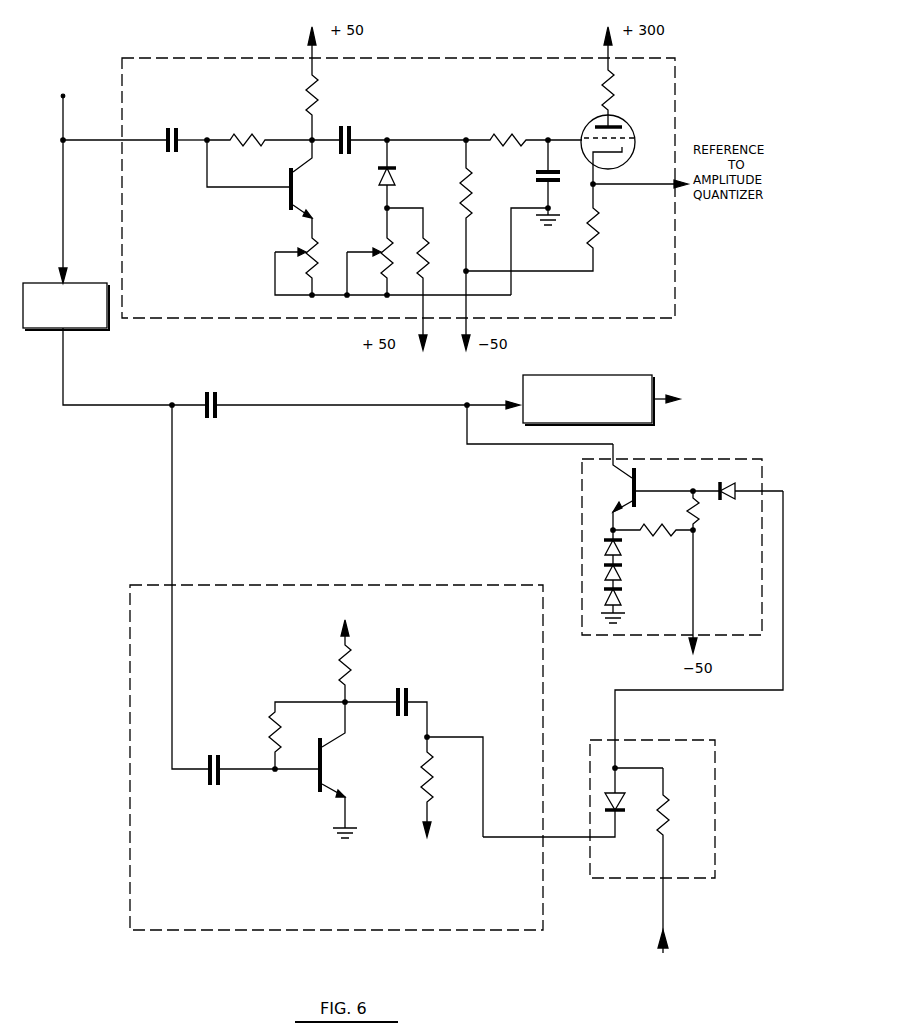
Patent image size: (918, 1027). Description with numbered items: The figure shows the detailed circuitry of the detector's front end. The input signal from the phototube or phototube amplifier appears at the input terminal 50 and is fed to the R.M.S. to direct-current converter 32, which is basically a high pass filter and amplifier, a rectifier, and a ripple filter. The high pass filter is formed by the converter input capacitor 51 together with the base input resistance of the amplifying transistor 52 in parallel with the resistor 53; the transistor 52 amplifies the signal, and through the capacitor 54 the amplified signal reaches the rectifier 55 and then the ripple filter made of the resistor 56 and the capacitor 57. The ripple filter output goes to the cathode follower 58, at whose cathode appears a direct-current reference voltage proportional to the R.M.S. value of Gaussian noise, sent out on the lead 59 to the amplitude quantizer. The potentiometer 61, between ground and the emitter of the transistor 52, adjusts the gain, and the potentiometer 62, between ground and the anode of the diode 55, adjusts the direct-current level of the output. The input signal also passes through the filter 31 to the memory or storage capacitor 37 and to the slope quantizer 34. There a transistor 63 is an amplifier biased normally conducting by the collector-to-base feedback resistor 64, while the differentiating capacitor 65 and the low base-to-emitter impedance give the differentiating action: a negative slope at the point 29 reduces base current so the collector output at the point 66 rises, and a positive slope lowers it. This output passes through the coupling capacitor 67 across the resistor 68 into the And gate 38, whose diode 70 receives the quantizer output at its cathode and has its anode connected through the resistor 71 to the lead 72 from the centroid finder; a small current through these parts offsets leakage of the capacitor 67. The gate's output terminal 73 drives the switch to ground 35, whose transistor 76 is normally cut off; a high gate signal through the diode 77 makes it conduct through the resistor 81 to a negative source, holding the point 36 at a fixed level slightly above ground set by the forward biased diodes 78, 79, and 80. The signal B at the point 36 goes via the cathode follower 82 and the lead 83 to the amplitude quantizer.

The point 29 is at (172, 403).
The filter 31 is at (80, 283).
The R.M.S. to direct-current converter 32 is at (155, 58).
The slope quantizer 34 is at (203, 585).
The switch to ground 35 is at (763, 476).
The point 36 is at (470, 403).
The memory or storage capacitor 37 is at (220, 400).
The And gate 38 is at (596, 878).
The input terminal 50 is at (66, 96).
The converter input capacitor 51 is at (178, 132).
The amplifying transistor 52 is at (288, 188).
The resistor 53 is at (242, 135).
The capacitor 54 is at (352, 133).
The rectifier 55 is at (394, 175).
The resistor 56 is at (507, 133).
The capacitor 57 is at (540, 172).
The cathode follower 58 is at (626, 123).
The lead 59 is at (637, 187).
The potentiometer 61 is at (315, 250).
The potentiometer 62 is at (389, 252).
The transistor 63 is at (326, 774).
The collector-to-base feedback resistor 64 is at (281, 741).
The differentiating capacitor 65 is at (222, 757).
The point 66 is at (348, 702).
The coupling capacitor 67 is at (411, 698).
The resistor 68 is at (425, 790).
The diode 70 is at (621, 805).
The resistor 71 is at (670, 826).
The lead 72 is at (665, 913).
The output terminal 73 is at (618, 768).
The transistor 76 is at (640, 492).
The diode 77 is at (728, 500).
The diode 78 is at (628, 548).
The diode 79 is at (628, 572).
The diode 80 is at (628, 597).
The resistor 81 is at (658, 530).
The cathode follower 82 is at (565, 375).
The lead 83 is at (657, 392).